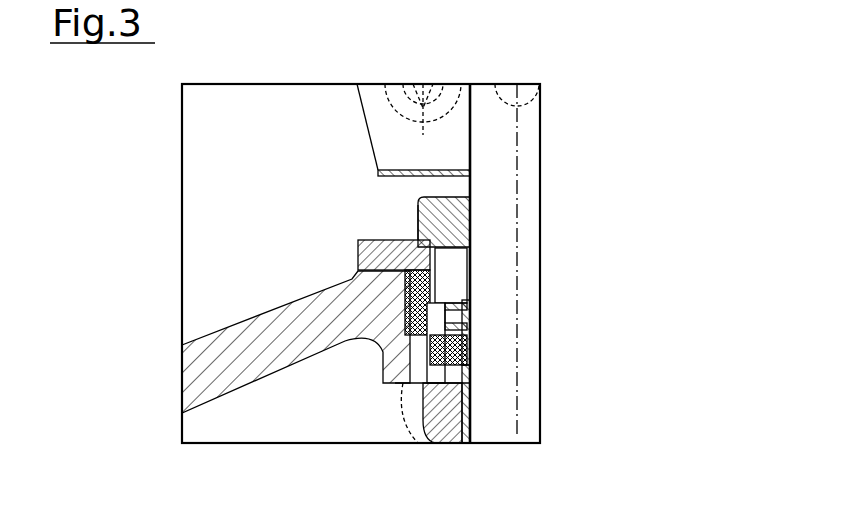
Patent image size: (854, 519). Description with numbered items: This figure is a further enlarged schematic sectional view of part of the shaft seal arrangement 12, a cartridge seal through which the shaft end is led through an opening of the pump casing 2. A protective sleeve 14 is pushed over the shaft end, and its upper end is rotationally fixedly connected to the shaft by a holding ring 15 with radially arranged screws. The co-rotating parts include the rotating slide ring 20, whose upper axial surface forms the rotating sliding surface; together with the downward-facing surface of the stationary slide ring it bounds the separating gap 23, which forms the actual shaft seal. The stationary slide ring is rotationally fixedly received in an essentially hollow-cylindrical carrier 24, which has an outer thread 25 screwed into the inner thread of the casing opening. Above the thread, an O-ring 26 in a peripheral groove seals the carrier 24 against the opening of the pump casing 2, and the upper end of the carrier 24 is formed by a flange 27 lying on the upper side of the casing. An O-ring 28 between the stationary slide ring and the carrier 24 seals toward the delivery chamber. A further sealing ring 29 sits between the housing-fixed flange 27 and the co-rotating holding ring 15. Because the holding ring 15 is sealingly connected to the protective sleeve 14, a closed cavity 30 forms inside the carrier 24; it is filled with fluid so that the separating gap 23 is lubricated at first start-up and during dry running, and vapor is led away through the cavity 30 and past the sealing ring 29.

The pump casing 2 is at (243, 344).
The shaft seal arrangement 12 is at (522, 82).
The protective sleeve 14 is at (470, 286).
The holding ring 15 is at (452, 218).
The rotating slide ring 20 is at (468, 430).
The separating gap 23 is at (470, 385).
The carrier 24 is at (436, 305).
The outer thread 25 is at (425, 348).
The O-ring 26 is at (405, 301).
The flange 27 is at (362, 257).
The O-ring 28 is at (457, 360).
The sealing ring 29 is at (418, 218).
The cavity 30 is at (457, 265).